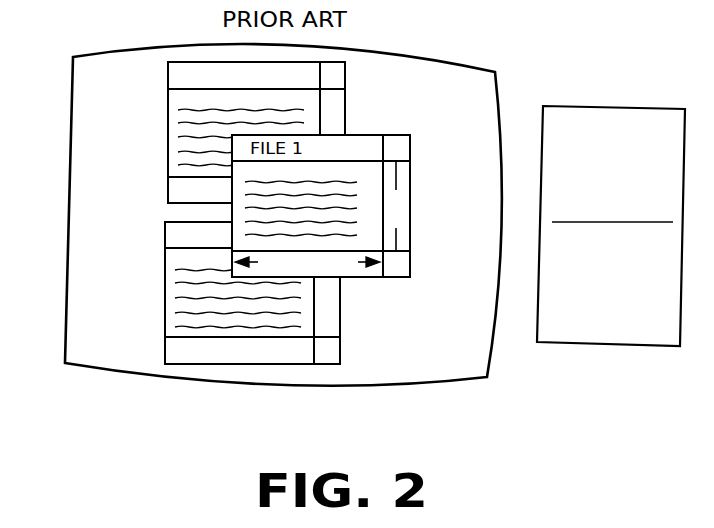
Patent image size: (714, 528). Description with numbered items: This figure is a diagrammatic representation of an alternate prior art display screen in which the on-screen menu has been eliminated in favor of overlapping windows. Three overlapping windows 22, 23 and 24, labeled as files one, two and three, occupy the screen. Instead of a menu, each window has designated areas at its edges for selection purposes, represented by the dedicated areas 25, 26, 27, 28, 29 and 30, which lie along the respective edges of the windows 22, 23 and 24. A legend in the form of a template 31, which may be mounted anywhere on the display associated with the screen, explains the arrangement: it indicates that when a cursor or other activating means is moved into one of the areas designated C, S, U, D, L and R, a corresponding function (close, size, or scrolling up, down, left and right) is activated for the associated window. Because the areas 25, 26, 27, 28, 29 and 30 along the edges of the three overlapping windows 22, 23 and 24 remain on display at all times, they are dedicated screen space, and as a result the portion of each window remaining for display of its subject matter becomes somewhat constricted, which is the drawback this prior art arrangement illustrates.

The window 22 is at (347, 101).
The dedicated area 29 is at (337, 128).
The dedicated area 30 is at (167, 198).
The window 23 is at (410, 200).
The dedicated area 25 is at (402, 210).
The dedicated area 28 is at (297, 262).
The window 24 is at (342, 317).
The dedicated area 26 is at (323, 326).
The dedicated area 27 is at (168, 355).
The template 31 is at (602, 112).